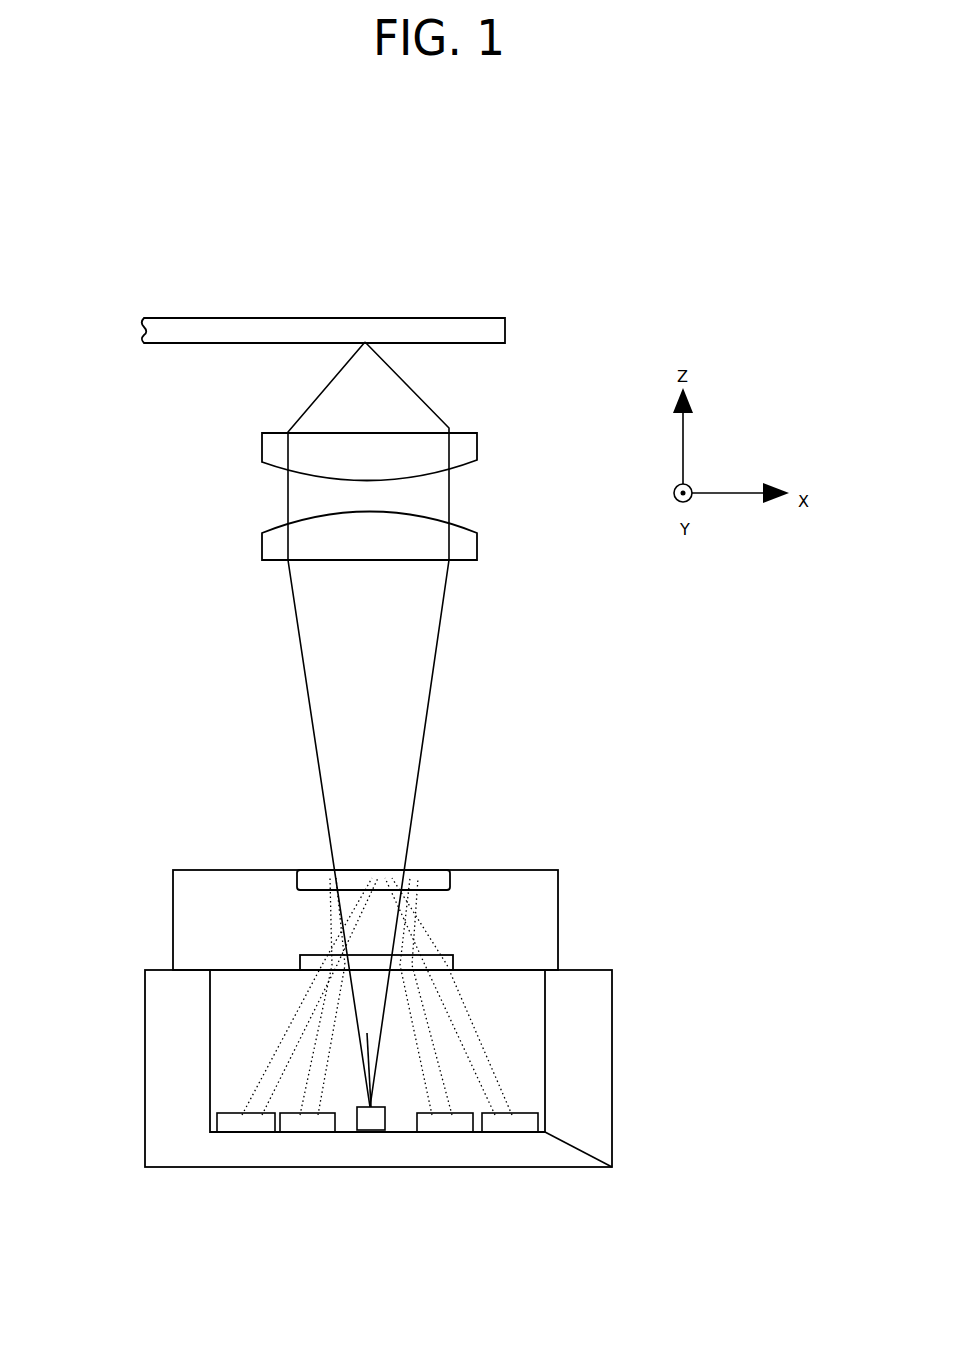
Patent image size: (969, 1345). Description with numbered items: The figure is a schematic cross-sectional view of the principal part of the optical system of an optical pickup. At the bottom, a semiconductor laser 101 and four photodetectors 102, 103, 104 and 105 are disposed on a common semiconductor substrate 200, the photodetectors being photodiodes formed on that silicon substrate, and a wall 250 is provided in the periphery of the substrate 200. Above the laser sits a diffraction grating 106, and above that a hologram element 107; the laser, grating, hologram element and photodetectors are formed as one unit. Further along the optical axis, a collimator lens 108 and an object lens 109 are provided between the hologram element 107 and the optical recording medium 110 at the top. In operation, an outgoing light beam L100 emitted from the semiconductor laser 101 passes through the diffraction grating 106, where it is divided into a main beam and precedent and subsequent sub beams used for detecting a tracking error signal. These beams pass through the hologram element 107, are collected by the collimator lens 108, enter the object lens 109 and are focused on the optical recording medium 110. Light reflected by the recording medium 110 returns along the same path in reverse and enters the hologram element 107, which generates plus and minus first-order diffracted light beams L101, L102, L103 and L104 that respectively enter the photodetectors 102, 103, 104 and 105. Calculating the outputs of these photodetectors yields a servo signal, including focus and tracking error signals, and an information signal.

The optical recording medium 110 is at (467, 332).
The object lens 109 is at (468, 447).
The collimator lens 108 is at (477, 555).
The hologram element 107 is at (440, 877).
The diffraction grating 106 is at (455, 963).
The wall 250 is at (572, 1052).
The substrate 200 is at (252, 1150).
The semiconductor laser 101 is at (373, 1123).
The photodetector 102 is at (255, 1123).
The photodetector 103 is at (307, 1123).
The photodetector 104 is at (443, 1123).
The photodetector 105 is at (500, 1120).
The outgoing light beam L100 is at (372, 1107).
The diffracted light beam L101 is at (293, 1027).
The diffracted light beam L102 is at (323, 1032).
The diffracted light beam L103 is at (420, 1050).
The diffracted light beam L104 is at (467, 1033).